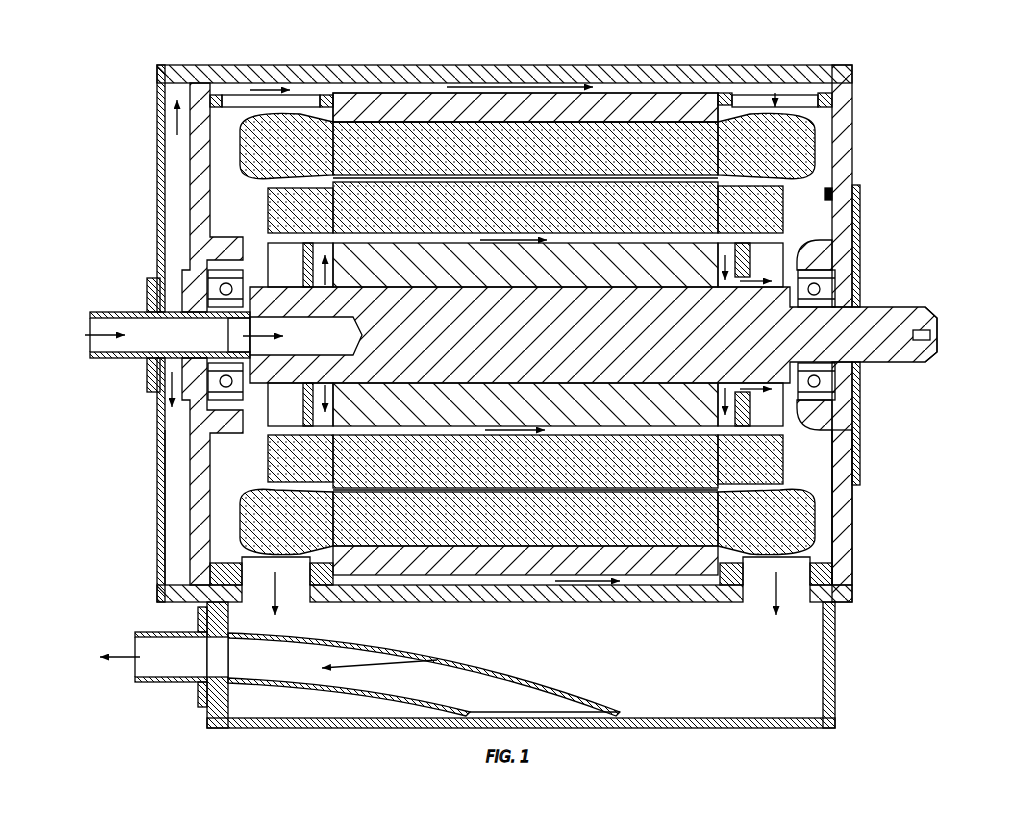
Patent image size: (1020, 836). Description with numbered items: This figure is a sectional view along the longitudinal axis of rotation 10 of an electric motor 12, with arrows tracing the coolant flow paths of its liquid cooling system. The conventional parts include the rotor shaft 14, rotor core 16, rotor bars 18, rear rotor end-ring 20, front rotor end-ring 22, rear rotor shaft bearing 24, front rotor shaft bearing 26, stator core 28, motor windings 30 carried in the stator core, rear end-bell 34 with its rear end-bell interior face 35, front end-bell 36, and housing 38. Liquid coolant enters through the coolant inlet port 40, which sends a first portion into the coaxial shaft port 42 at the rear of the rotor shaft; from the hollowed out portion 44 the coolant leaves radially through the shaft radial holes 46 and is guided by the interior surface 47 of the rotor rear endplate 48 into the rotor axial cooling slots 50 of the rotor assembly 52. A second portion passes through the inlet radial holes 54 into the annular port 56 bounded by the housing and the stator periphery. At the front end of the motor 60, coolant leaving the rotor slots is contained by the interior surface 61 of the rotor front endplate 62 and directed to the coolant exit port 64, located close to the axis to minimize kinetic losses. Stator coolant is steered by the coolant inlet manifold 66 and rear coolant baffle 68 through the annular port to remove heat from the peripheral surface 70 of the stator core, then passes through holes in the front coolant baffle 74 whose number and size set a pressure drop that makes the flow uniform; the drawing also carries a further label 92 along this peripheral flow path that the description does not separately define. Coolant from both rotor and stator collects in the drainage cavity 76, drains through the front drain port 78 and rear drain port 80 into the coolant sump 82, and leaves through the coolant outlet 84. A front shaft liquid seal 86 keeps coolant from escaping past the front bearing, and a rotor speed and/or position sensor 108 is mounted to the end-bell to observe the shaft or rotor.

The longitudinal axis of rotation 10 is at (940, 336).
The electric motor 12 is at (660, 55).
The rotor shaft 14 is at (897, 312).
The rotor core 16 is at (780, 157).
The rotor bars 18 is at (455, 208).
The rear rotor end-ring 20 is at (290, 210).
The front rotor end-ring 22 is at (743, 453).
The rear rotor shaft bearing 24 is at (253, 270).
The front rotor shaft bearing 26 is at (856, 270).
The stator core 28 is at (452, 112).
The motor windings 30 is at (500, 150).
The rear end-bell 34 is at (198, 508).
The rear end-bell interior face 35 is at (208, 510).
The front end-bell 36 is at (843, 95).
The housing 38 is at (330, 74).
The coolant inlet port 40 is at (112, 312).
The coaxial shaft port 42 is at (228, 325).
The hollowed out portion 44 is at (257, 325).
The shaft radial holes 46 is at (327, 350).
The interior surface 47 is at (320, 250).
The rotor rear endplate 48 is at (300, 253).
The rotor axial cooling slots 50 is at (374, 240).
The rotor assembly 52 is at (767, 513).
The inlet radial holes 54 is at (168, 318).
The annular port 56 is at (366, 88).
The front end of the motor 60 is at (870, 540).
The interior surface 61 is at (745, 224).
The rotor front endplate 62 is at (800, 250).
The coolant exit port 64 is at (750, 282).
The coolant inlet manifold 66 is at (186, 68).
The rear coolant baffle 68 is at (287, 104).
The peripheral surface 70 is at (693, 88).
The front coolant baffle 74 is at (748, 100).
The drainage cavity 76 is at (823, 497).
The front drain port 78 is at (758, 598).
The rear drain port 80 is at (290, 598).
The coolant sump 82 is at (836, 667).
The coolant outlet 84 is at (136, 648).
The front shaft liquid seal 86 is at (852, 294).
The coolant flow path 92 is at (610, 87).
The rotor speed and/or position sensor 108 is at (838, 194).